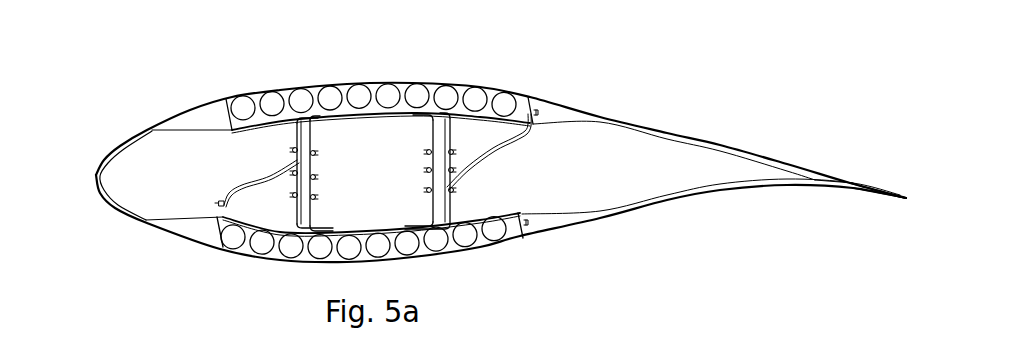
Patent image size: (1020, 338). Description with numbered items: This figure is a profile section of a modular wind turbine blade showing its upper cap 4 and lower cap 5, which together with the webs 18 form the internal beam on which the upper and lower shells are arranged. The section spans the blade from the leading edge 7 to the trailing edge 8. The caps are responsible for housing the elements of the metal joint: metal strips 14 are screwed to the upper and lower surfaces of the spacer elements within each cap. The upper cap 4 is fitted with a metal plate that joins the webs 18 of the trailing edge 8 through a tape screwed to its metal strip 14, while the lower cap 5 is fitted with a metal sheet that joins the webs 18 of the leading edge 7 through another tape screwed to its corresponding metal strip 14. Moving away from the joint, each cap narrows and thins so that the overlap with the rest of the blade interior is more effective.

The upper cap 4 is at (557, 114).
The lower cap 5 is at (205, 228).
The leading edge 7 is at (122, 145).
The trailing edge 8 is at (777, 163).
The metal strip 14 is at (342, 230).
The web 18 is at (298, 168).